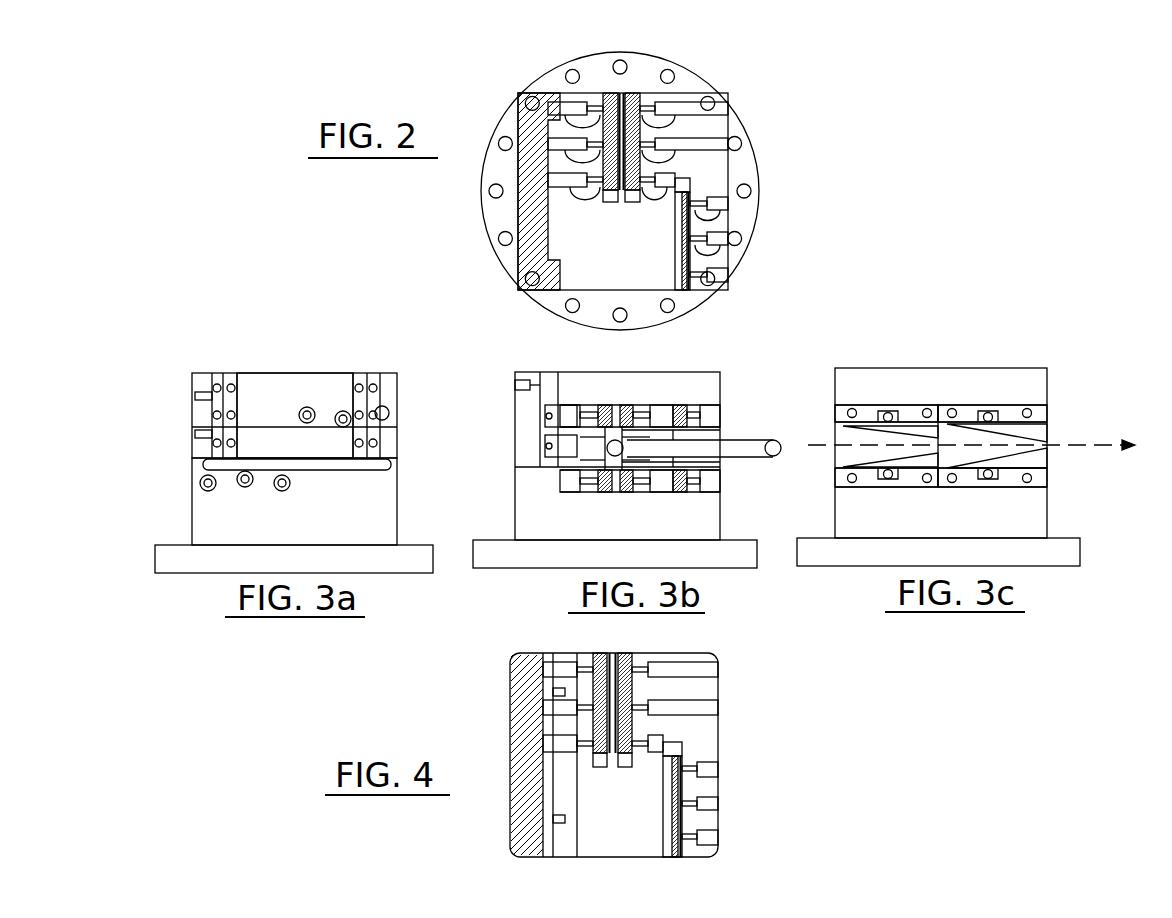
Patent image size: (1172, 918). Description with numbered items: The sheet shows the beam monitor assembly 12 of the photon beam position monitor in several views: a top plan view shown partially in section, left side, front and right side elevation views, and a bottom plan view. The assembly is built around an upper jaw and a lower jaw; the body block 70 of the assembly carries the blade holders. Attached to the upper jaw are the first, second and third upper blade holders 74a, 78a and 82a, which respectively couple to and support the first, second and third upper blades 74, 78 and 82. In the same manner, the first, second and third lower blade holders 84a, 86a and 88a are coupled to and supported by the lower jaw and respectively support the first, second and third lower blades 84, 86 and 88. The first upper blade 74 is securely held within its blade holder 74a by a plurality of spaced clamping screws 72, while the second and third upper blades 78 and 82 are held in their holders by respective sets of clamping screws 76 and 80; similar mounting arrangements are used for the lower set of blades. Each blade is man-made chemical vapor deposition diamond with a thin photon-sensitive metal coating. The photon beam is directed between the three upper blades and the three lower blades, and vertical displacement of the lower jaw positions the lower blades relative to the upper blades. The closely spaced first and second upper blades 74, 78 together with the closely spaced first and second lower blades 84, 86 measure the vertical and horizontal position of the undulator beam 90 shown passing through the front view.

In FIG. 2, the beam monitor assembly 12 is at (740, 95).
In FIG. 3a, the beam monitor assembly 12 is at (182, 410).
In FIG. 3b, the beam monitor assembly 12 is at (515, 368).
In FIG. 3c, the beam monitor assembly 12 is at (1028, 362).
In FIG. 4, the beam monitor assembly 12 is at (725, 715).
In FIG. 2, the support block 70 is at (520, 215).
In FIG. 3a, the support block 70 is at (280, 383).
In FIG. 3b, the support block 70 is at (530, 420).
In FIG. 2, the clamping screws 72 is at (555, 118).
In FIG. 3b, the first upper blade 74 is at (592, 437).
In FIG. 2, the first upper blade holder 74a is at (608, 93).
In FIG. 3b, the first upper blade holder 74a is at (607, 405).
In FIG. 2, the clamping screws 76 is at (683, 178).
In FIG. 3b, the second upper blade 78 is at (640, 437).
In FIG. 3c, the second upper blade 78 is at (1037, 432).
In FIG. 2, the second upper blade holder 78a is at (633, 93).
In FIG. 3b, the second upper blade holder 78a is at (630, 405).
In FIG. 3c, the second upper blade holder 78a is at (968, 412).
In FIG. 2, the clamping screws 80 is at (692, 230).
In FIG. 3b, the third upper blade 82 is at (680, 433).
In FIG. 3c, the third upper blade 82 is at (918, 430).
In FIG. 2, the third upper blade holder 82a is at (690, 257).
In FIG. 3b, the third upper blade holder 82a is at (682, 405).
In FIG. 3c, the third upper blade holder 82a is at (868, 412).
In FIG. 3b, the first lower blade 84 is at (600, 460).
In FIG. 3b, the first lower blade holder 84a is at (603, 470).
In FIG. 4, the first lower blade holder 84a is at (597, 653).
In FIG. 3b, the second lower blade 86 is at (645, 470).
In FIG. 3c, the second lower blade 86 is at (1037, 460).
In FIG. 3b, the second lower blade holder 86a is at (627, 470).
In FIG. 3c, the second lower blade holder 86a is at (1005, 480).
In FIG. 4, the second lower blade holder 86a is at (632, 653).
In FIG. 3b, the third lower blade 88 is at (680, 462).
In FIG. 3c, the third lower blade 88 is at (908, 462).
In FIG. 3b, the third lower blade holder 88a is at (680, 483).
In FIG. 3c, the third lower blade holder 88a is at (870, 480).
In FIG. 4, the third lower blade holder 88a is at (682, 820).
In FIG. 3b, the undulator beam 90 is at (752, 437).